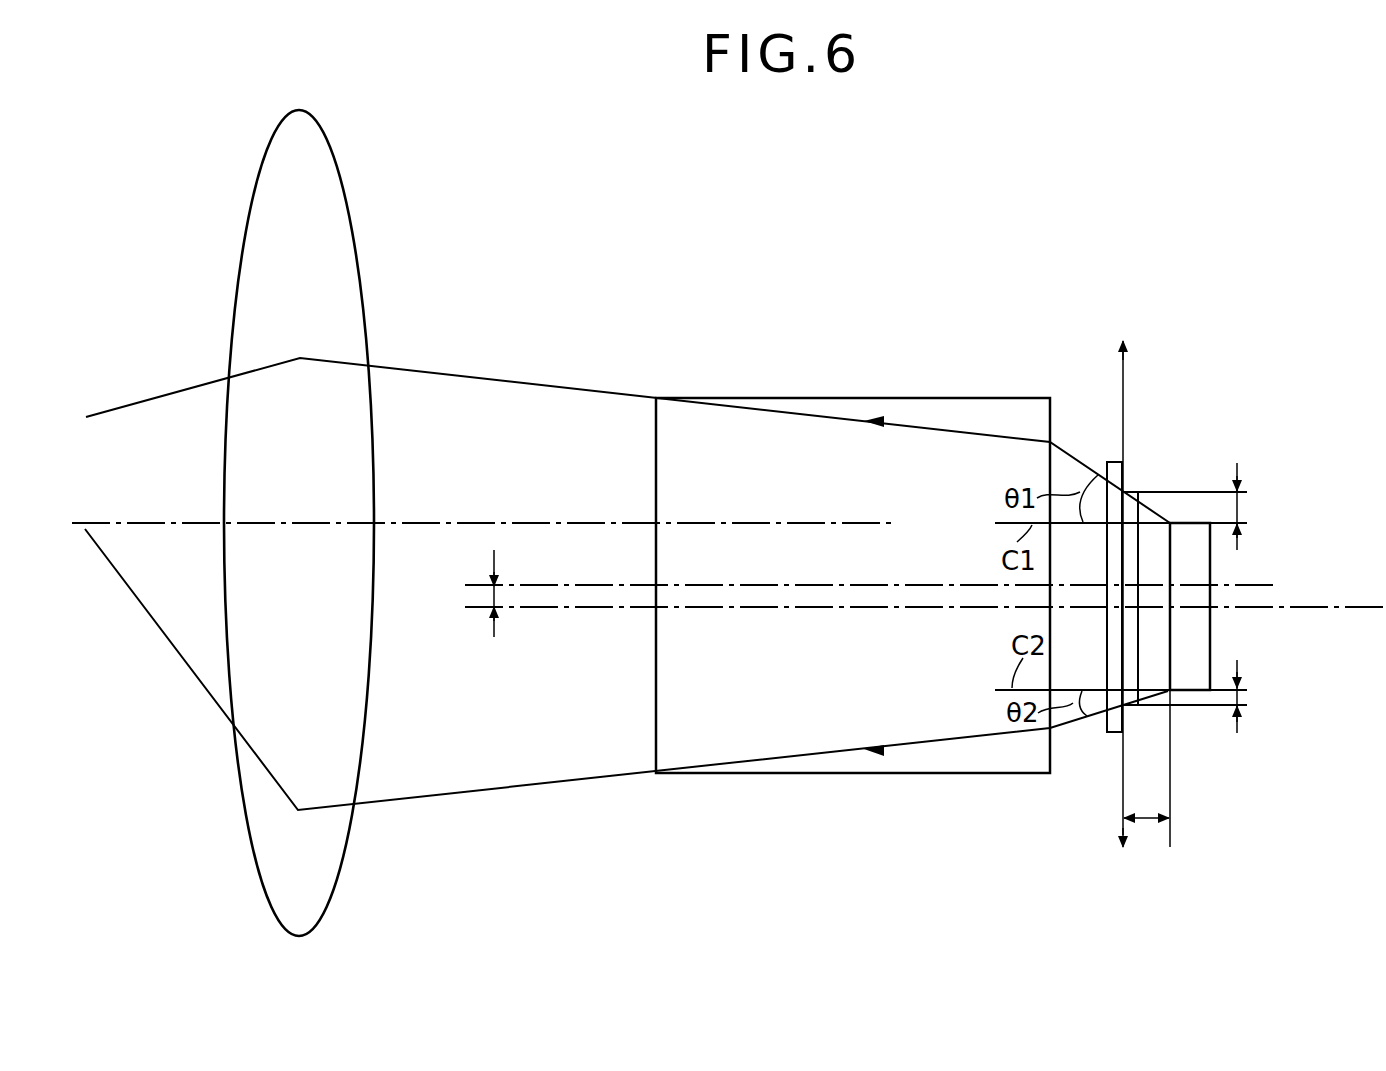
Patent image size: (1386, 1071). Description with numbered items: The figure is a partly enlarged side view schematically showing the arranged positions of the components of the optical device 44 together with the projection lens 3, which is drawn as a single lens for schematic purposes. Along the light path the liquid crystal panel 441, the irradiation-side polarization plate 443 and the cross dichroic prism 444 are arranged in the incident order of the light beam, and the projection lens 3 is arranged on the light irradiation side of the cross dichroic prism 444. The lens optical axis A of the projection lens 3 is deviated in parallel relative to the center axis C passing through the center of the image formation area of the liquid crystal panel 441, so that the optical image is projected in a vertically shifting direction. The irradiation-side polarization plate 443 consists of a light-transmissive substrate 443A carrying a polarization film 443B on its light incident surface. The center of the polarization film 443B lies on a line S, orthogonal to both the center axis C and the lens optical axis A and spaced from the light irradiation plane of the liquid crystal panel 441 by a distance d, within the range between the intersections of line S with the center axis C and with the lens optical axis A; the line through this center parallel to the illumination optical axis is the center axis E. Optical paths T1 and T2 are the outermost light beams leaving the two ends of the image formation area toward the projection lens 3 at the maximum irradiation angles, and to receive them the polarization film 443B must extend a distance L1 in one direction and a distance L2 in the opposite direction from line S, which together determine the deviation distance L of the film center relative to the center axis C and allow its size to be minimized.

The projection lens 3 is at (326, 137).
The optical device 44 is at (1104, 209).
The liquid crystal panel 441 is at (1210, 652).
The irradiation-side polarization plate 443 is at (1141, 532).
The light-transmissive substrate 443A is at (1115, 460).
The polarization film 443B is at (1132, 490).
The cross dichroic prism 444 is at (984, 398).
The lens optical axis A is at (133, 523).
The center axis of the polarization film E is at (767, 585).
The center axis of the liquid crystal panel C is at (1358, 607).
The distance L is at (493, 595).
The distance L1 is at (1237, 507).
The distance L2 is at (1237, 697).
The distance d is at (1147, 771).
The line S is at (1124, 368).
The optical path T1 is at (1098, 475).
The optical path T2 is at (1158, 695).